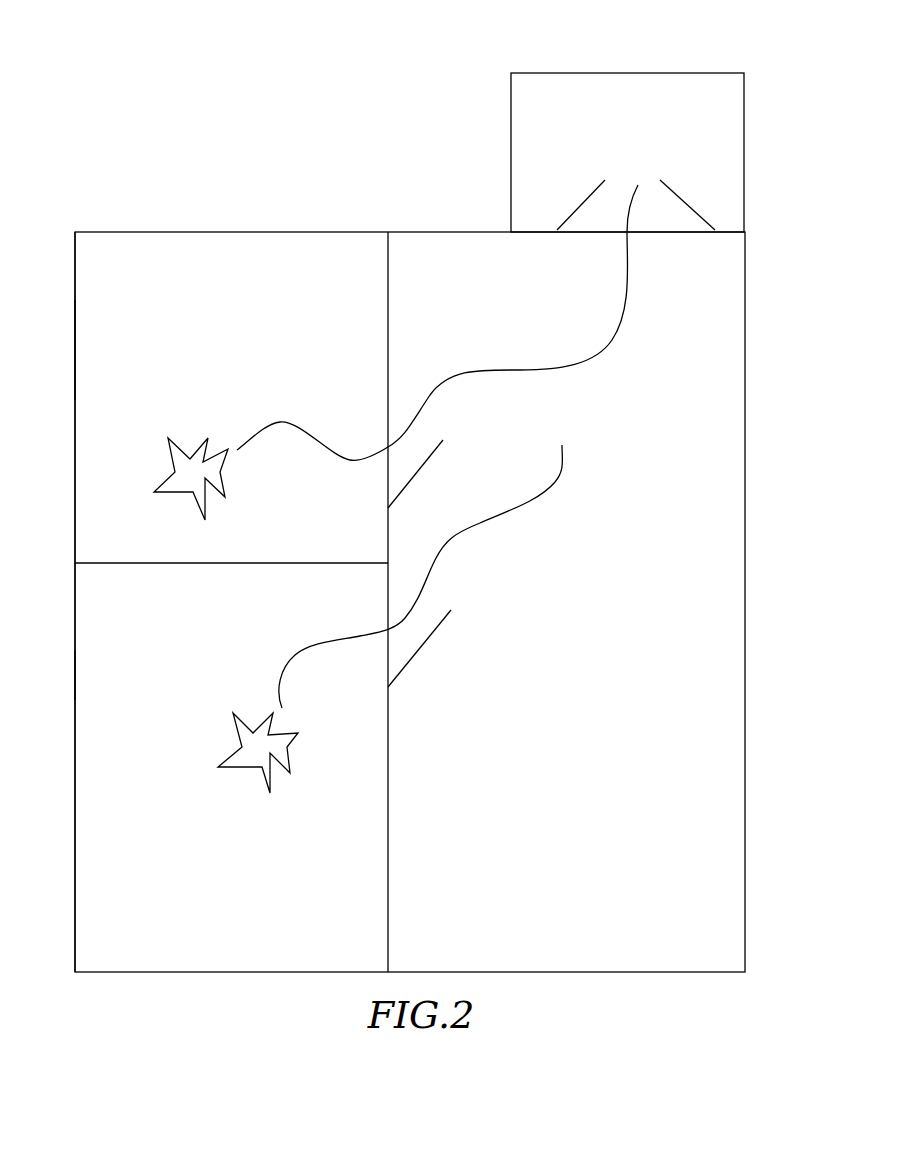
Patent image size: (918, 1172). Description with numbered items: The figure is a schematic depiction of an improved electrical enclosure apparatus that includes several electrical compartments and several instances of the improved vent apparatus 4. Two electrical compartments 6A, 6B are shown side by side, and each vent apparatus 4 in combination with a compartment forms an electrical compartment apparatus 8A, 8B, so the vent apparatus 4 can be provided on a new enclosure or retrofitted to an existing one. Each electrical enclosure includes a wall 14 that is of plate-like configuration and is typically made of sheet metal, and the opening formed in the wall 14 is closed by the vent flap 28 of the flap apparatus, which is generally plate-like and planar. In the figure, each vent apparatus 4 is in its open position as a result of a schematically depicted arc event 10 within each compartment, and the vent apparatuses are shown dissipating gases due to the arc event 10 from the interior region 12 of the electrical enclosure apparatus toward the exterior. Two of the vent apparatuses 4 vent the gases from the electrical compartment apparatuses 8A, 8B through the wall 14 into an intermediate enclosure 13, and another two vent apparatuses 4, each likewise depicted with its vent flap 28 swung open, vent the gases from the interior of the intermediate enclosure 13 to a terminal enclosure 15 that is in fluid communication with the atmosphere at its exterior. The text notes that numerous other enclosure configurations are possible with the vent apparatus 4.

The vent apparatus 4 is at (575, 203).
The electrical compartment 6A is at (72, 291).
The electrical compartment 6B is at (72, 619).
The electrical compartment apparatus 8A is at (72, 348).
The electrical compartment apparatus 8B is at (72, 728).
The arc event 10 is at (193, 452).
The interior region 12 is at (90, 488).
The intermediate enclosure 13 is at (745, 886).
The wall 14 is at (388, 344).
The terminal enclosure 15 is at (572, 73).
The vent flap 28 is at (603, 181).